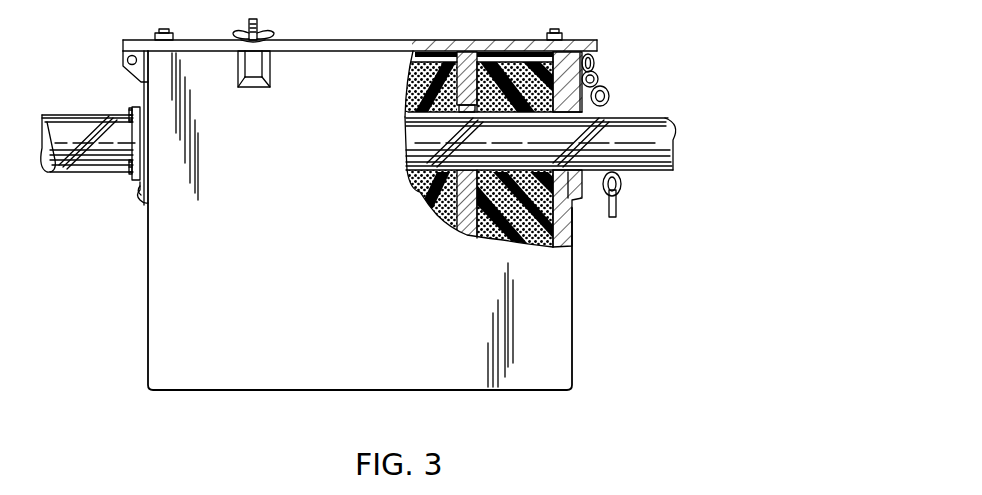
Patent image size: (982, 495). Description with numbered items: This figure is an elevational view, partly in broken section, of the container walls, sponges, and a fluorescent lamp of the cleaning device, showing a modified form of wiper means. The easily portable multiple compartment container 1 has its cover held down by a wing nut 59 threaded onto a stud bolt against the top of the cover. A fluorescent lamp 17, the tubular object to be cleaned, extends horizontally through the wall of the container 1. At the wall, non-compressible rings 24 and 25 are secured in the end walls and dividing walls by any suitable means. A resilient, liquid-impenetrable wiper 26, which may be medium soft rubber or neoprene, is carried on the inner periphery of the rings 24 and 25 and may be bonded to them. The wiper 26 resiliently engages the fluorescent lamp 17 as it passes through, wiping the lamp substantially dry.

The container 1 is at (160, 255).
The fluorescent lamp 17 is at (638, 120).
The non-compressible ring 24 is at (450, 212).
The non-compressible ring 25 is at (471, 230).
The wiper 26 is at (516, 240).
The wing nut 59 is at (269, 34).